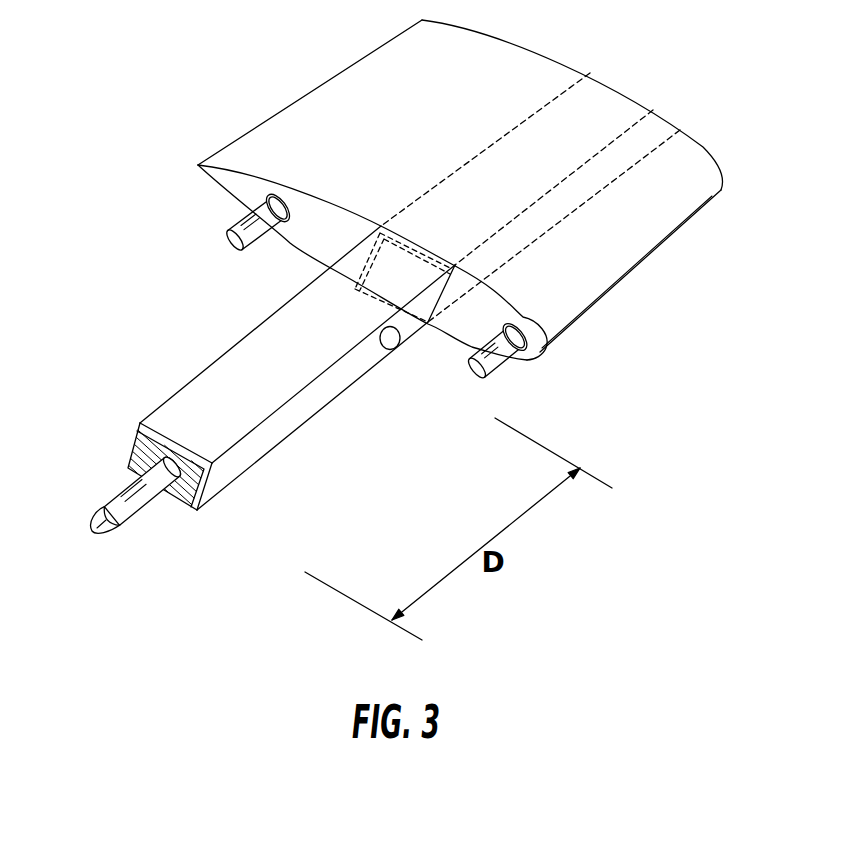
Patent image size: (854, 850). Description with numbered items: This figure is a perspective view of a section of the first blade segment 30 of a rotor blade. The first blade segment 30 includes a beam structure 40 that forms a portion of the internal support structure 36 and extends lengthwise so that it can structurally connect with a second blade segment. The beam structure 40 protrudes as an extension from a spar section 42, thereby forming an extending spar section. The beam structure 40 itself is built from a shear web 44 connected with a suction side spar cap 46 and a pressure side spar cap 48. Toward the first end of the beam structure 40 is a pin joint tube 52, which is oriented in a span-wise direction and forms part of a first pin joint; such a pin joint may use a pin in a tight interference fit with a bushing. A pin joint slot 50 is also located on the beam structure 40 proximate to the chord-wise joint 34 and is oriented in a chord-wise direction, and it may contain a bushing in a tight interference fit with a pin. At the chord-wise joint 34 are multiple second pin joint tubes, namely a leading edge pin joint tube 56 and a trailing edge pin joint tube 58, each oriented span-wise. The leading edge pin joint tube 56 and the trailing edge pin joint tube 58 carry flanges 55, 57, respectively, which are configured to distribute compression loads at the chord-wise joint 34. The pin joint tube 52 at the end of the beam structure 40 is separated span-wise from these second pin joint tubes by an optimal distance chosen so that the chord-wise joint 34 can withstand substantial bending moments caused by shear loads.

The first blade segment 30 is at (431, 190).
The chord-wise joint 34 is at (229, 197).
The internal support structure 36 is at (323, 383).
The beam structure 40 is at (172, 405).
The spar section 42 is at (608, 97).
The shear web 44 is at (357, 384).
The suction side spar cap 46 is at (128, 467).
The pressure side spar cap 48 is at (140, 423).
The pin joint slot 50 is at (386, 341).
The pin joint tube 52 is at (270, 383).
The flanges 55 is at (142, 507).
The leading edge pin joint tube 56 is at (478, 375).
The flanges 57 is at (256, 211).
The trailing edge pin joint tube 58 is at (235, 240).